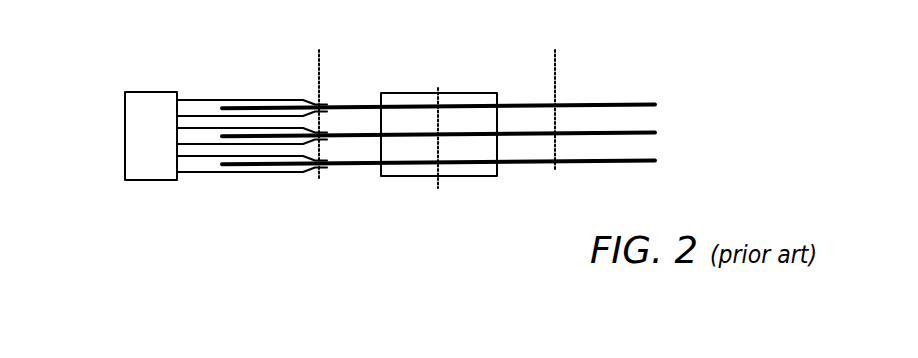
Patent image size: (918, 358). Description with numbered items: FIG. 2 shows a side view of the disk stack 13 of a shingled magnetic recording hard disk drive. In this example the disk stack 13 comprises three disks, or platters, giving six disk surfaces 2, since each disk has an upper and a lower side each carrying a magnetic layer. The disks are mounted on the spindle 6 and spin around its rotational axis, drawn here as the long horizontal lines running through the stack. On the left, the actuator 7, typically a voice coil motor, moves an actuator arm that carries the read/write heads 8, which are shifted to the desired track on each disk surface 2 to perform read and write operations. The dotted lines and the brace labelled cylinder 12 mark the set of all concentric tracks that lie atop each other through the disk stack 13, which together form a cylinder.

The disk surface 2 is at (595, 103).
The spindle 6 is at (439, 182).
The actuator 7 is at (142, 137).
The read/write heads 8 is at (317, 102).
The cylinder 12 is at (319, 53).
The disk stack 13 is at (665, 99).